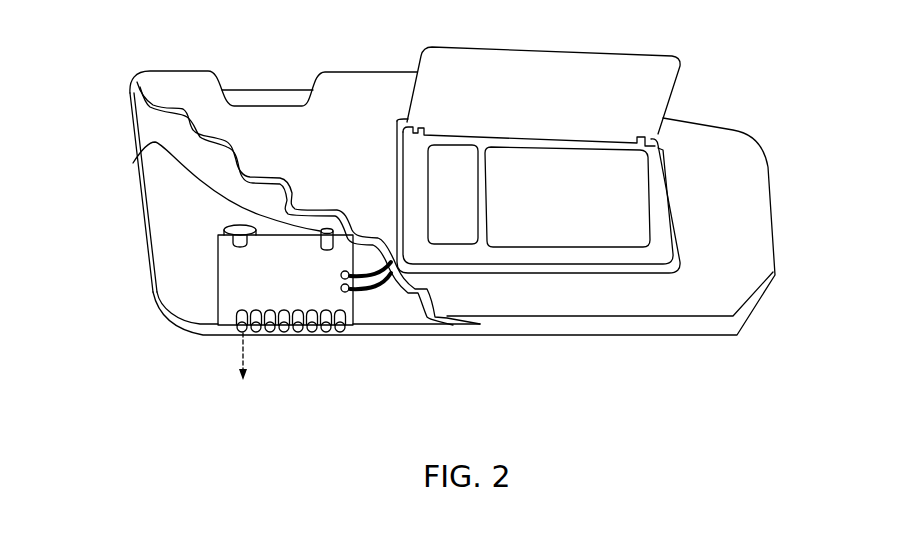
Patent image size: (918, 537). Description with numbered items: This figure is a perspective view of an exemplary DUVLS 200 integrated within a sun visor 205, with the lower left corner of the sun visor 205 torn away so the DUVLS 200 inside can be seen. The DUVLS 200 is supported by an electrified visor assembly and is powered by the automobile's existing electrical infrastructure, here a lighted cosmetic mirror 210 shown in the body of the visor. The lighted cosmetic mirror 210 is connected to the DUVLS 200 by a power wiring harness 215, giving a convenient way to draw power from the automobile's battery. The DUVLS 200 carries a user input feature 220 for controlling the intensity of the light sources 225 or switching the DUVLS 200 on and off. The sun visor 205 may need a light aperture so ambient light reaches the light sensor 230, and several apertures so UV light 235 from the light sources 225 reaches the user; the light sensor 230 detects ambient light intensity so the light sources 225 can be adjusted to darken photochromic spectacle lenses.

The DUVLS 200 is at (200, 287).
The sun visor 205 is at (398, 72).
The lighted cosmetic mirror 210 is at (686, 161).
The power wiring harness 215 is at (380, 298).
The user input feature 220 is at (233, 234).
The light source 225 is at (240, 331).
The light sensor 230 is at (135, 158).
The UV light 235 is at (244, 347).